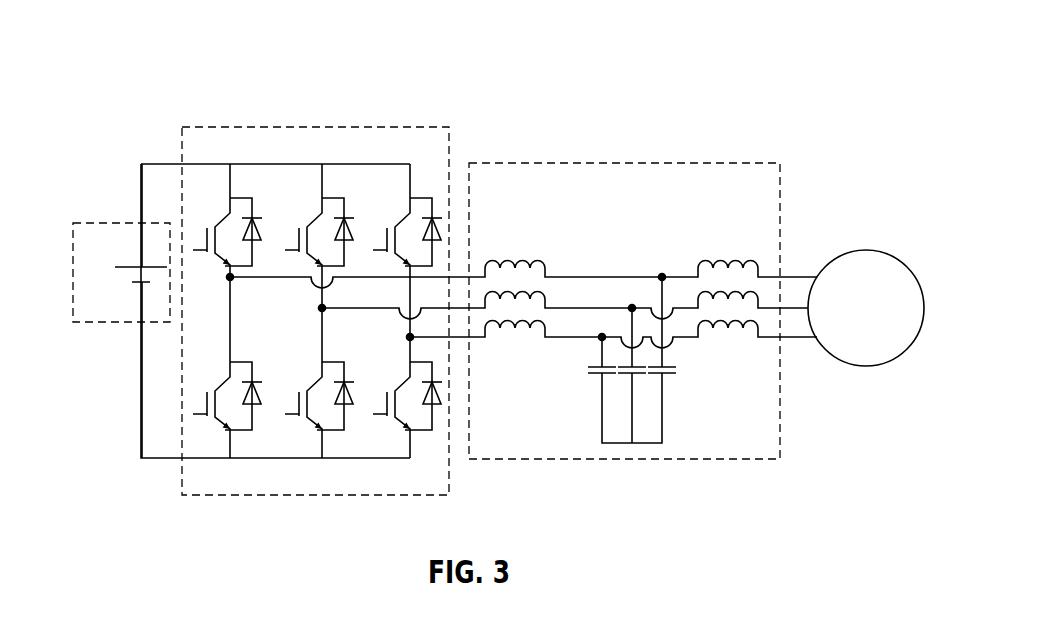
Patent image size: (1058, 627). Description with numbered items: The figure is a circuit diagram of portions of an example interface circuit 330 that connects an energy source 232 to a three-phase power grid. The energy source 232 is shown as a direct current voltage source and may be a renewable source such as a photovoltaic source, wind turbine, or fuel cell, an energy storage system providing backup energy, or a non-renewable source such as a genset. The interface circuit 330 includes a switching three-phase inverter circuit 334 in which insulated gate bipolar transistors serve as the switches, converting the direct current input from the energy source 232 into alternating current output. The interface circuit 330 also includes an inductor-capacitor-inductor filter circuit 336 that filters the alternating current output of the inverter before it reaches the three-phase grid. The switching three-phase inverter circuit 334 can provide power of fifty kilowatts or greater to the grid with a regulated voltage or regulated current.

The interface circuit 330 is at (612, 68).
The energy source 232 is at (72, 281).
The switching three-phase inverter circuit 334 is at (252, 127).
The inductor-capacitor-inductor filter circuit 336 is at (540, 163).